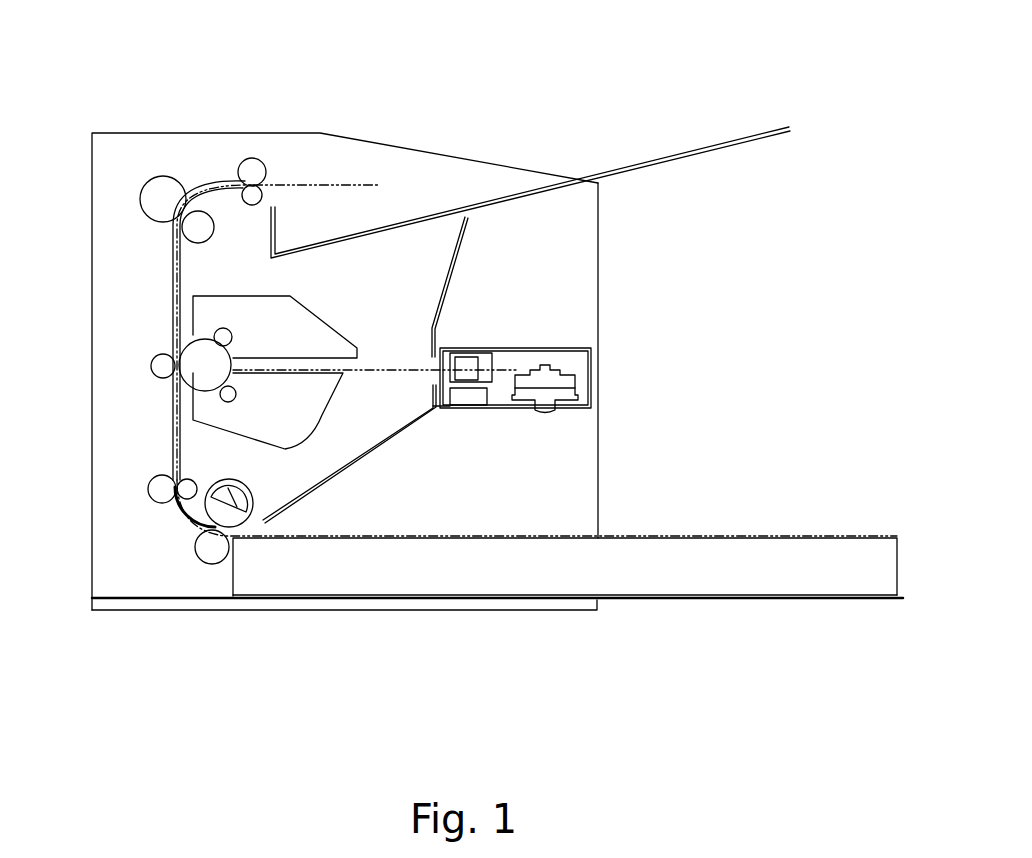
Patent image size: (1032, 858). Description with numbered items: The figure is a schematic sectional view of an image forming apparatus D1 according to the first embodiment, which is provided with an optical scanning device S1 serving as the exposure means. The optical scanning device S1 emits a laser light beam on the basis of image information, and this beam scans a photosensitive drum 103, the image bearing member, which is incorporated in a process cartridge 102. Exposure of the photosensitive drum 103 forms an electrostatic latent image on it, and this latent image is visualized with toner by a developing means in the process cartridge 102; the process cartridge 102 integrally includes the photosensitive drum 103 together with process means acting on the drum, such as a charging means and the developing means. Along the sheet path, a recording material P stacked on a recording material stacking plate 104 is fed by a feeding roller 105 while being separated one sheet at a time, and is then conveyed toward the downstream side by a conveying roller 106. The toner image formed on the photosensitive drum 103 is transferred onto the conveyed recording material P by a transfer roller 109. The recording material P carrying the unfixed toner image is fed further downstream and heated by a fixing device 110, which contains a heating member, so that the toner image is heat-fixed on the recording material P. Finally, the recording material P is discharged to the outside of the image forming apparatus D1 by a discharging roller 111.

The image forming apparatus D1 is at (138, 143).
The discharging roller 111 is at (252, 160).
The fixing device 110 is at (158, 190).
The photosensitive drum 103 is at (203, 343).
The transfer roller 109 is at (158, 360).
The process cartridge 102 is at (322, 316).
The feeding roller 105 is at (253, 487).
The conveying roller 106 is at (155, 498).
The optical scanning device S1 is at (572, 360).
The recording material P is at (792, 537).
The recording material stacking plate 104 is at (647, 601).